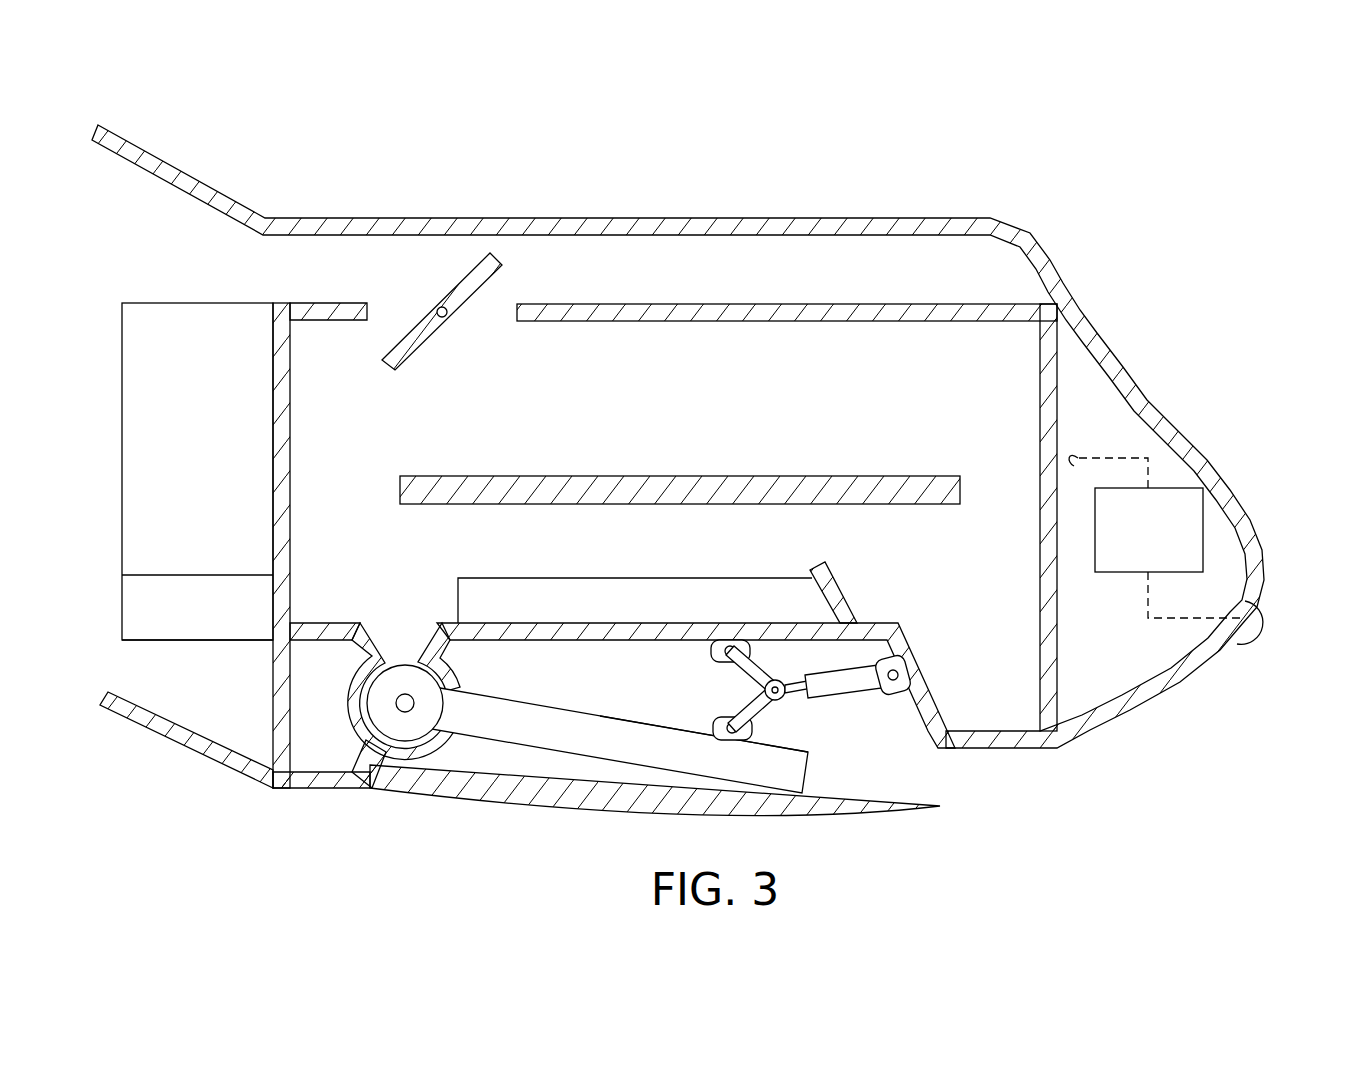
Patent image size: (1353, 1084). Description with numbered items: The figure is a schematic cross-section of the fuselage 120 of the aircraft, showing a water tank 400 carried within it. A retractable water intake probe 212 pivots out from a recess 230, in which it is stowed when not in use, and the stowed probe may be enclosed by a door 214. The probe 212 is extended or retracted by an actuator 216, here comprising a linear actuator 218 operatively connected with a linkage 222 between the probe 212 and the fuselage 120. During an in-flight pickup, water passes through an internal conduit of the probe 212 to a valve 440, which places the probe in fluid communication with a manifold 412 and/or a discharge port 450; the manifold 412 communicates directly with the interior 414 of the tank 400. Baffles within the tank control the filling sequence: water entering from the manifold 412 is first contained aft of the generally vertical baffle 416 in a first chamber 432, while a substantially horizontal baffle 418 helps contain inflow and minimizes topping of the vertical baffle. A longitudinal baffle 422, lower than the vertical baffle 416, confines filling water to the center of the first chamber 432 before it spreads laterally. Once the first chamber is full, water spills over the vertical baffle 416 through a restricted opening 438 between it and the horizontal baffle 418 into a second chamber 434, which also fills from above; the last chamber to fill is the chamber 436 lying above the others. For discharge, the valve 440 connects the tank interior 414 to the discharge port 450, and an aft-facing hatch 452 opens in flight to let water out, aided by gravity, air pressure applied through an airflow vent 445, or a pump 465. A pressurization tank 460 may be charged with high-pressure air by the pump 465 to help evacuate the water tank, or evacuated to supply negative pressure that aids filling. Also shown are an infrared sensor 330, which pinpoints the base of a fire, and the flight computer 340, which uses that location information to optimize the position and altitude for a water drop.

The fuselage 120 is at (718, 217).
The water tank 400 is at (596, 304).
The interior of the water tank 414 is at (985, 512).
The pressurization tank 460 is at (172, 465).
The pump 465 is at (148, 642).
The first chamber 432 is at (472, 553).
The airflow vent 445 is at (400, 295).
The chamber 436 is at (708, 410).
The substantially horizontal baffle 418 is at (878, 475).
The flight computer 340 is at (1170, 487).
The infrared sensor 330 is at (1281, 641).
The longitudinal baffle 422 is at (720, 577).
The restricted opening 438 is at (827, 543).
The generally vertical baffle 416 is at (850, 588).
The chamber 434 is at (955, 638).
The aft-facing hatch 452 is at (273, 702).
The discharge port 450 is at (316, 756).
The door 214 is at (588, 800).
The manifold 412 is at (380, 641).
The recess 230 is at (578, 682).
The valve 440 is at (455, 672).
The water intake probe 212 is at (587, 757).
The actuator 216 is at (897, 750).
The linkage 222 is at (727, 688).
The linear actuator 218 is at (838, 688).